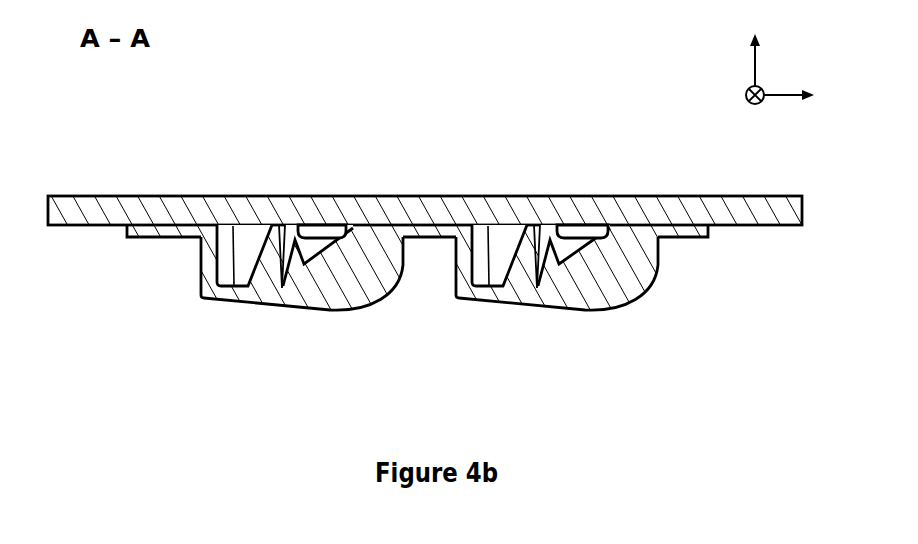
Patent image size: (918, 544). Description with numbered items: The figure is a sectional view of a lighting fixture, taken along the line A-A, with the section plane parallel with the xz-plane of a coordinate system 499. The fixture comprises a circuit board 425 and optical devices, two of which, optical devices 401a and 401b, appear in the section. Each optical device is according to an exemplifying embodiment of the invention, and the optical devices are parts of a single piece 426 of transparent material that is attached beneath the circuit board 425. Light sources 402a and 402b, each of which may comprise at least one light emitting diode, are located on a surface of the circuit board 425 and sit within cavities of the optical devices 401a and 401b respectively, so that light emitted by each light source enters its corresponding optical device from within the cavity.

The circuit board 425 is at (400, 195).
The single piece of transparent material 426 is at (167, 238).
The optical device 401a is at (320, 308).
The optical device 401b is at (582, 308).
The light source 402a is at (310, 228).
The light source 402b is at (582, 228).
The coordinate system 499 is at (812, 71).